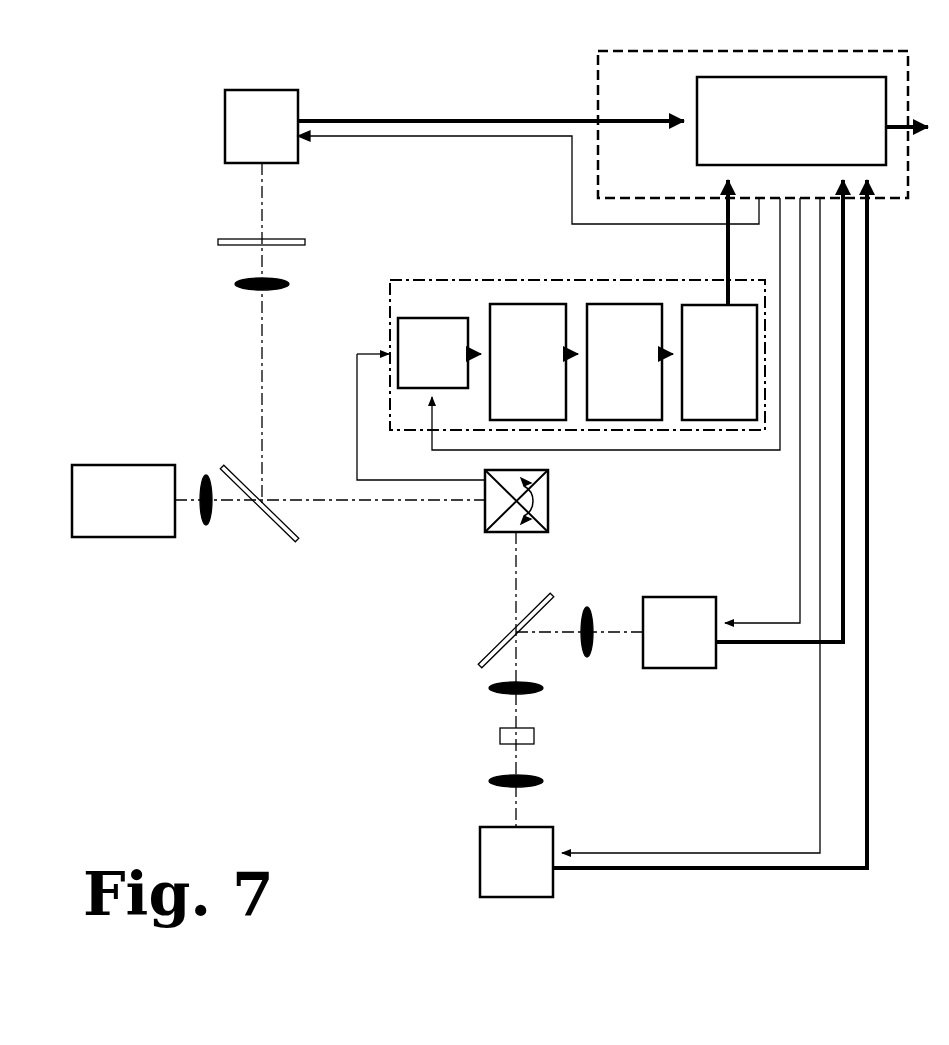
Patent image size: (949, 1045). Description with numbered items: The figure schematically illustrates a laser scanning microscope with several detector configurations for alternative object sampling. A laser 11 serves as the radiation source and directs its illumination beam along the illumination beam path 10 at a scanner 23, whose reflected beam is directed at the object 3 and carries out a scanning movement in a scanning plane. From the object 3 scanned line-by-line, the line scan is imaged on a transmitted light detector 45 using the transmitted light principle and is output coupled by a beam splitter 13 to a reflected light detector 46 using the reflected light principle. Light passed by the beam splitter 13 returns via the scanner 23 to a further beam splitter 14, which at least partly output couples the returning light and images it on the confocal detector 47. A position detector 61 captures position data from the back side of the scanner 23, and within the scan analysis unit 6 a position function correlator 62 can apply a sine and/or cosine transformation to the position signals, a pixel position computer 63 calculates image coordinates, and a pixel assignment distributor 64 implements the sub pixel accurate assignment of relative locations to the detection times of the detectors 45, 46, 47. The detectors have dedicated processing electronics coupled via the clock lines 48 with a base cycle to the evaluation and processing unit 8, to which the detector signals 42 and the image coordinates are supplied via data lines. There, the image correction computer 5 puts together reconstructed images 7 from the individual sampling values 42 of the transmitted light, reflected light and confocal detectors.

The object 3 is at (500, 733).
The image correction computer 5 is at (695, 142).
The scan analysis unit 6 is at (467, 278).
The reconstructed images 7 is at (918, 132).
The evaluation and processing unit 8 is at (597, 78).
The illumination beam path 10 is at (367, 502).
The laser 11 is at (122, 537).
The beam splitter 13 is at (517, 632).
The further beam splitter 14 is at (265, 513).
The scanner 23 is at (548, 502).
The detector signals 42 is at (387, 118).
The transmitted light detector 45 is at (480, 868).
The reflected light detector 46 is at (678, 669).
The confocal detector 47 is at (225, 124).
The clock lines 48 is at (738, 224).
The position detector 61 is at (435, 317).
The position function correlator 62 is at (535, 303).
The pixel position computer 63 is at (623, 303).
The pixel assignment distributor 64 is at (702, 304).